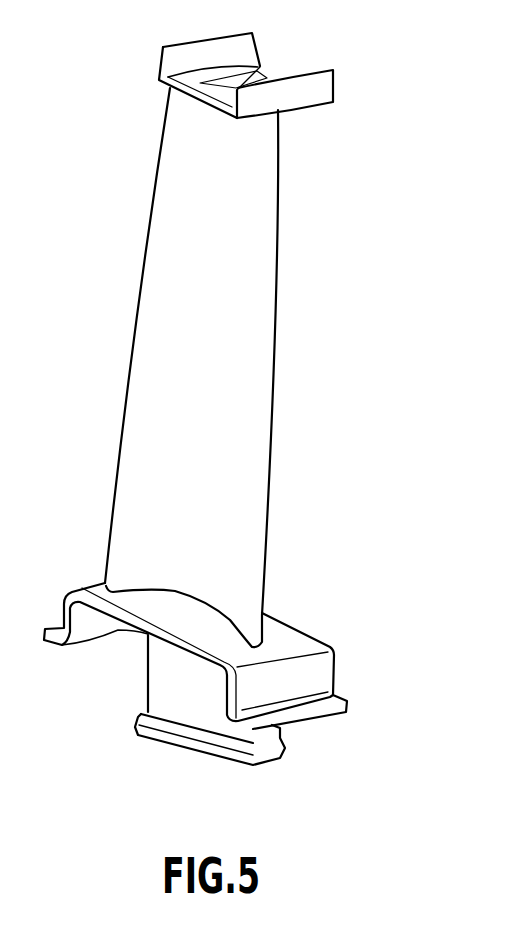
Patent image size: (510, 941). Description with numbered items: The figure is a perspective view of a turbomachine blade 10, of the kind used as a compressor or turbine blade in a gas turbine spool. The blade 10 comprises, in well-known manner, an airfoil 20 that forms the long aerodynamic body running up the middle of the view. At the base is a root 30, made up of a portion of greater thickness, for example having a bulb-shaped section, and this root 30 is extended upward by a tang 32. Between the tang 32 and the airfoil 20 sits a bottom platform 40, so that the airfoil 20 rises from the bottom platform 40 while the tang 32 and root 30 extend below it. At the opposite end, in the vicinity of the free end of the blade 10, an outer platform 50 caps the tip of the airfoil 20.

The blade 10 is at (198, 393).
The airfoil 20 is at (256, 355).
The root 30 is at (288, 752).
The tang 32 is at (172, 687).
The bottom platform 40 is at (289, 640).
The outer platform 50 is at (163, 44).